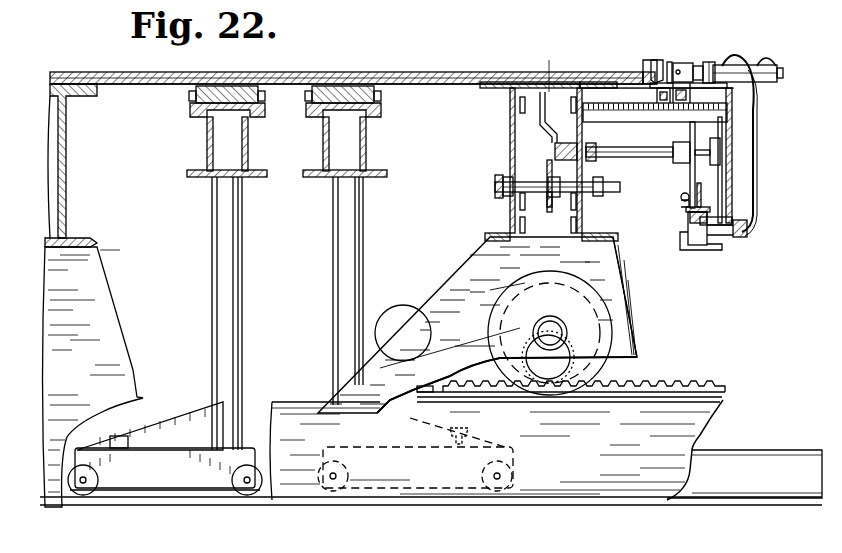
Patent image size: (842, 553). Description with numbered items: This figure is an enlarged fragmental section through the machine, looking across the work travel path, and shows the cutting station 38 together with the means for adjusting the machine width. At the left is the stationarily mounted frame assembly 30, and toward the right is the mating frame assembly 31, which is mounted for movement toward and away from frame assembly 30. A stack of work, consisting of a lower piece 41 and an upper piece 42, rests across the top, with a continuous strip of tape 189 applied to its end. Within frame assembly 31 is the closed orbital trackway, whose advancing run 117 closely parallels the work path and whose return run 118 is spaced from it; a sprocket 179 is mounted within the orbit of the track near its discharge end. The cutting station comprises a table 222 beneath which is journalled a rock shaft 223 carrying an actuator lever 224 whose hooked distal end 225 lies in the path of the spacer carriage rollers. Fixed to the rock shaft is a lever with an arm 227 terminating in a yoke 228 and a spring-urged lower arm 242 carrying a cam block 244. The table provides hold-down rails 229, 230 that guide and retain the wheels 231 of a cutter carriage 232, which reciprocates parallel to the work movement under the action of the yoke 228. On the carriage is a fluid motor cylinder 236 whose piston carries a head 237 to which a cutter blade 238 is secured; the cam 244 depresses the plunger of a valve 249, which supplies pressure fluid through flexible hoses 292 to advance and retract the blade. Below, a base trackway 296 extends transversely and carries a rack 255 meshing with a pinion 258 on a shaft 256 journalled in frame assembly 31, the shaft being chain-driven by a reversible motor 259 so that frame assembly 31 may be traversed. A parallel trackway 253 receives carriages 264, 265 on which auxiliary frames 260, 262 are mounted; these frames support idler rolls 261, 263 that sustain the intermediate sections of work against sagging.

The frame assembly 30 is at (85, 125).
The frame assembly 31 is at (493, 137).
The cutting station 38 is at (725, 23).
The lower piece 41 is at (427, 85).
The upper piece 42 is at (457, 71).
The advancing run 117 is at (533, 90).
The return run 118 is at (514, 217).
The sprocket 179 is at (549, 208).
The tape 189 is at (648, 85).
The table 222 is at (606, 122).
The rock shaft 223 is at (636, 157).
The actuator lever 224 is at (547, 130).
The distal end 225 is at (555, 90).
The lever arm 227 is at (690, 134).
The yoke 228 is at (684, 63).
The hold-down rail 229 is at (658, 100).
The hold-down rail 230 is at (733, 100).
The wheels 231 is at (666, 104).
The cutter carriage 232 is at (710, 62).
The fluid motor cylinder 236 is at (740, 62).
The head 237 is at (659, 60).
The cutter blade 238 is at (651, 58).
The lower arm 242 is at (683, 186).
The cam block 244 is at (697, 190).
The valve 249 is at (680, 238).
The trackway 253 is at (732, 456).
The rack 255 is at (655, 385).
The shaft 256 is at (553, 326).
The pinion 258 is at (524, 354).
The reversible motor 259 is at (387, 308).
The auxiliary frame 260 is at (220, 268).
The idler rolls 261 is at (236, 90).
The auxiliary frame 262 is at (342, 228).
The idler rolls 263 is at (349, 96).
The carriages 264 is at (151, 478).
The carriages 265 is at (510, 453).
The flexible hoses 292 is at (762, 176).
The base trackway 296 is at (703, 423).